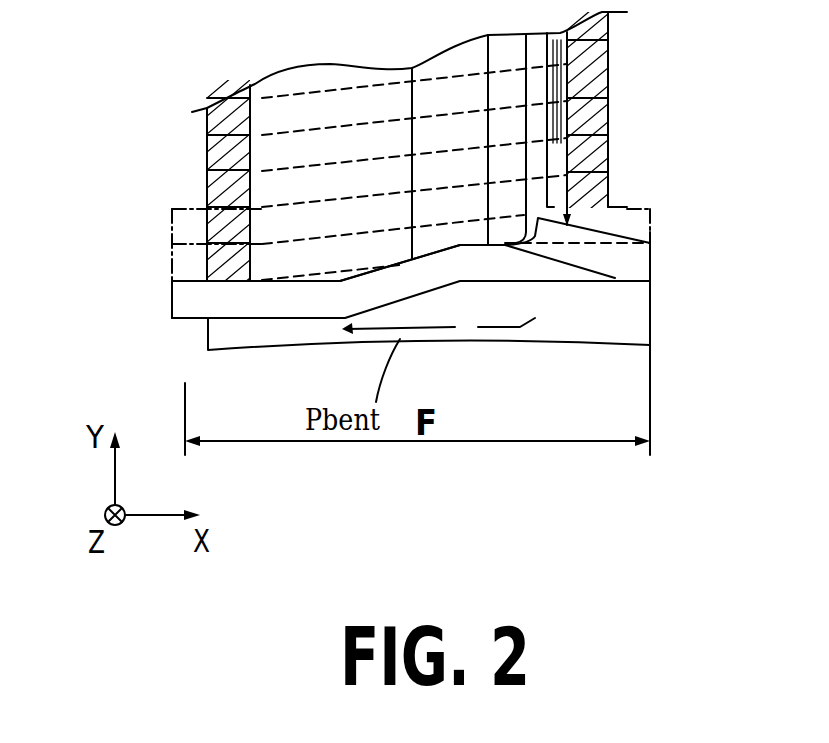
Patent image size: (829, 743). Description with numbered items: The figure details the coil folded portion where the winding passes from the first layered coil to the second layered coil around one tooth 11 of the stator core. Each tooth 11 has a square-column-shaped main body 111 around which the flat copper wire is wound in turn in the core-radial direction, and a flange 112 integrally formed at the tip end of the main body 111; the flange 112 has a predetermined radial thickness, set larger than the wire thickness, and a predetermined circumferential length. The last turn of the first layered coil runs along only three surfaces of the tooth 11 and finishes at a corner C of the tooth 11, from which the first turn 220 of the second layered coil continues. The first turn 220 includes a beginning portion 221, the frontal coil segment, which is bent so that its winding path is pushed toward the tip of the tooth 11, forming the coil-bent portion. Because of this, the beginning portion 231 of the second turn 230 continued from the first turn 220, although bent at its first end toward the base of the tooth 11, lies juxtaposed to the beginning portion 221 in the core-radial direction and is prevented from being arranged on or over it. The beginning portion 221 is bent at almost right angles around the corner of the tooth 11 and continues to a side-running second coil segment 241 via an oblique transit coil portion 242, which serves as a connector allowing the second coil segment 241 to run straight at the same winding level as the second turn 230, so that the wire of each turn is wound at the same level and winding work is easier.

The tooth 11 is at (580, 43).
The main body 111 is at (533, 82).
The flange 112 is at (637, 325).
The first turn 220 is at (315, 326).
The beginning portion 221 is at (473, 260).
The second turn 230 is at (638, 200).
The beginning portion 231 is at (555, 274).
The second coil segment 241 is at (172, 265).
The oblique transit coil portion 242 is at (186, 303).
The corner C is at (612, 295).